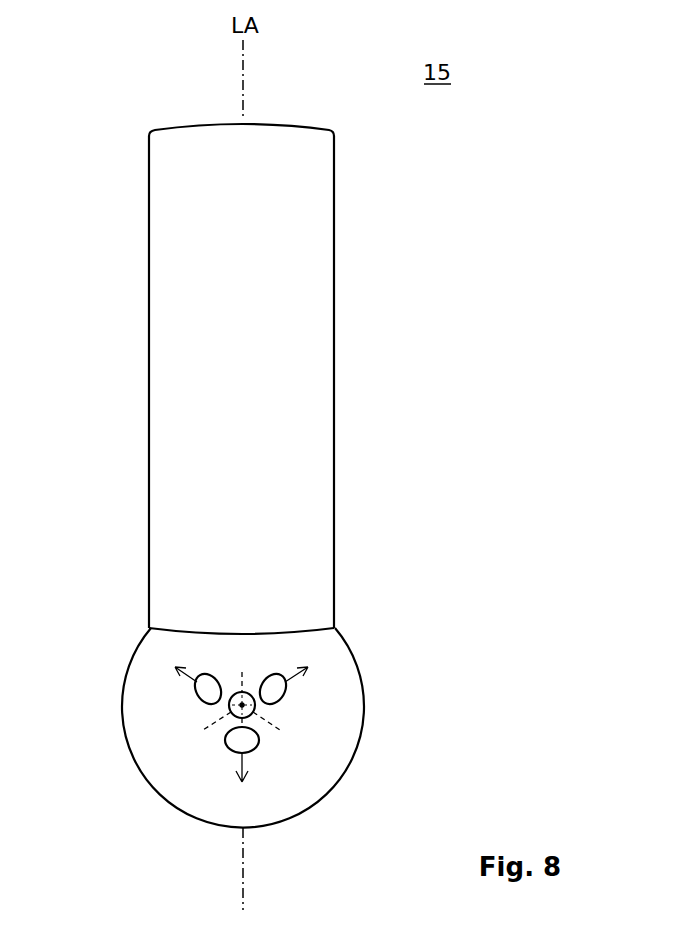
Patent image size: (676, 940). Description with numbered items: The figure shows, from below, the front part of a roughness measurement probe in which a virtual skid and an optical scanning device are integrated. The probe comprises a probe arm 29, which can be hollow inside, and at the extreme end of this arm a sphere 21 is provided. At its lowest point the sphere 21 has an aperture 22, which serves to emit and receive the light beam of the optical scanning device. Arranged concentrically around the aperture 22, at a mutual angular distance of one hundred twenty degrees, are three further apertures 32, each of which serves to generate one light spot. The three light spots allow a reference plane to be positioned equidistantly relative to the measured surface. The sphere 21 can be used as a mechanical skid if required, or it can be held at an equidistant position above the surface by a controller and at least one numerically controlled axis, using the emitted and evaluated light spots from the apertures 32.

The sphere 21 is at (275, 805).
The aperture 22 is at (254, 719).
The probe arm 29 is at (313, 375).
The further apertures 32 is at (192, 700).